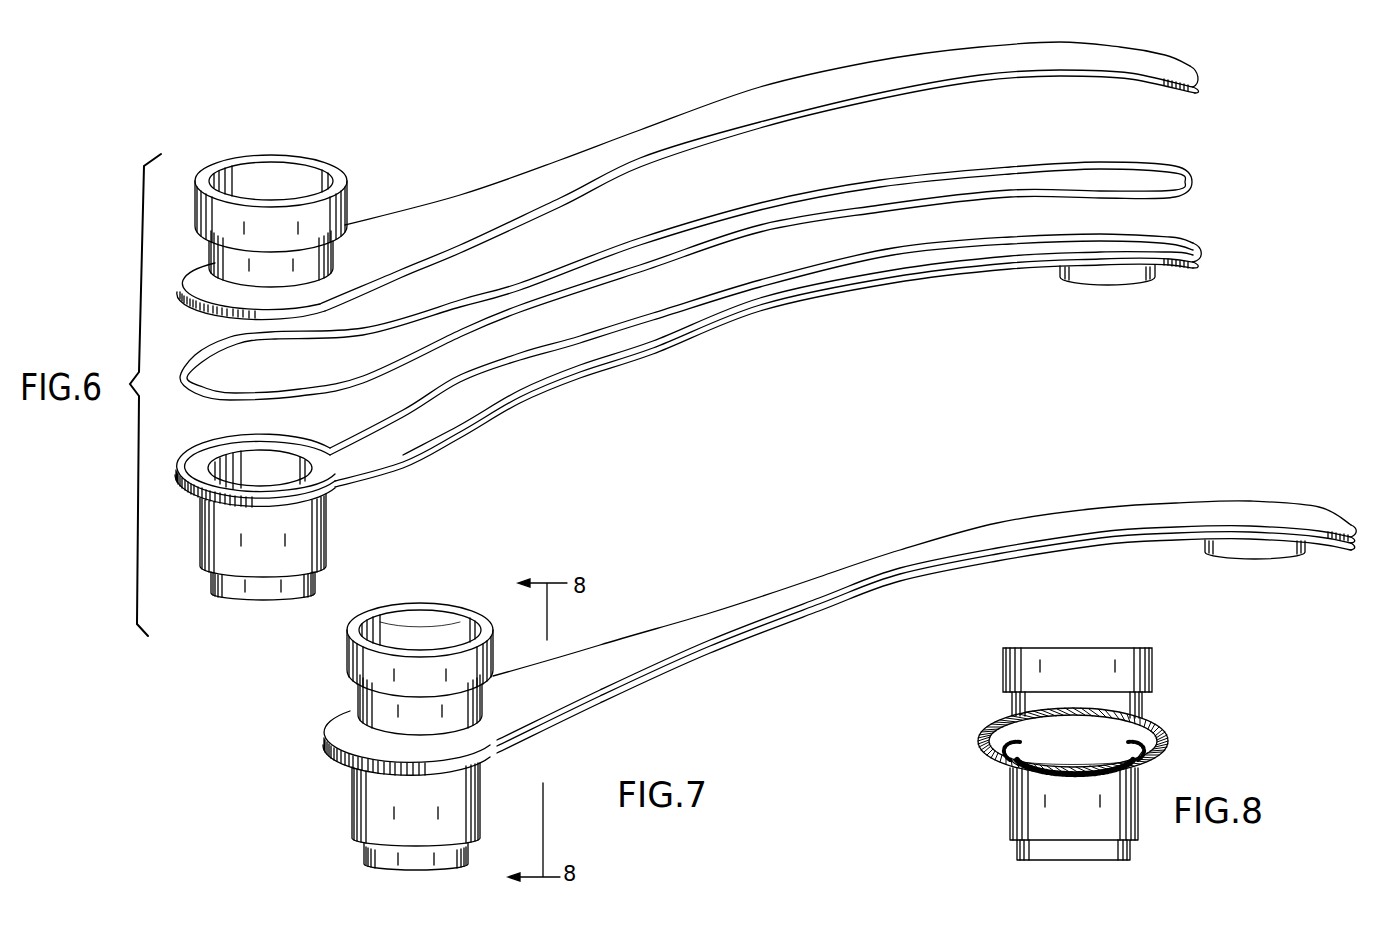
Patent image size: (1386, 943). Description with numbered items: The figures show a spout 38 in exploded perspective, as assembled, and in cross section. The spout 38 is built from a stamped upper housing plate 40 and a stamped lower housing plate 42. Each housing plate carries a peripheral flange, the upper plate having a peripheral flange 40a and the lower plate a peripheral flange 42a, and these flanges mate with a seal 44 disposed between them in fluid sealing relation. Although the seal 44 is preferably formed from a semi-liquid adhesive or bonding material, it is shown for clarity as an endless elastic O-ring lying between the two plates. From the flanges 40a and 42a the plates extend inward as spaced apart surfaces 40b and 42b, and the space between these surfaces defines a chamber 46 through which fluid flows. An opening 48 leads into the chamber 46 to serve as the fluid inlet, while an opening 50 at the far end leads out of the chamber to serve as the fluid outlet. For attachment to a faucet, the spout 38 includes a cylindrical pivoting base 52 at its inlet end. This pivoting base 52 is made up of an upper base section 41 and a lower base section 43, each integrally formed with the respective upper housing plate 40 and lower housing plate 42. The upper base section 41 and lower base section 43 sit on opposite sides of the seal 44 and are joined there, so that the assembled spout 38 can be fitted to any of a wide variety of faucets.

In FIG. 6, the spout 38 is at (423, 160).
In FIG. 7, the spout 38 is at (1056, 486).
In FIG. 6, the upper housing plate 40 is at (577, 150).
In FIG. 7, the upper housing plate 40 is at (655, 644).
In FIG. 8, the upper housing plate 40 is at (987, 720).
In FIG. 6, the peripheral flange 40a is at (595, 190).
In FIG. 8, the peripheral flange 40a is at (1167, 748).
In FIG. 6, the surface 40b is at (760, 95).
In FIG. 7, the surface 40b is at (794, 583).
In FIG. 8, the surface 40b is at (1087, 713).
In FIG. 6, the upper base section 41 is at (343, 207).
In FIG. 7, the upper base section 41 is at (363, 660).
In FIG. 6, the lower housing plate 42 is at (653, 354).
In FIG. 7, the lower housing plate 42 is at (750, 645).
In FIG. 8, the lower housing plate 42 is at (1047, 777).
In FIG. 6, the peripheral flange 42a is at (403, 411).
In FIG. 8, the peripheral flange 42a is at (1008, 745).
In FIG. 6, the surface 42b is at (893, 280).
In FIG. 7, the surface 42b is at (647, 694).
In FIG. 8, the surface 42b is at (1097, 780).
In FIG. 6, the lower base section 43 is at (310, 540).
In FIG. 7, the lower base section 43 is at (367, 825).
In FIG. 6, the seal 44 is at (778, 200).
In FIG. 8, the seal 44 is at (1004, 750).
In FIG. 8, the chamber 46 is at (1097, 737).
In FIG. 6, the opening 48 is at (240, 463).
In FIG. 7, the opening 48 is at (432, 622).
In FIG. 6, the opening 50 is at (1117, 283).
In FIG. 7, the opening 50 is at (1282, 559).
In FIG. 7, the cylindrical pivoting base 52 is at (320, 770).
In FIG. 8, the cylindrical pivoting base 52 is at (1036, 642).